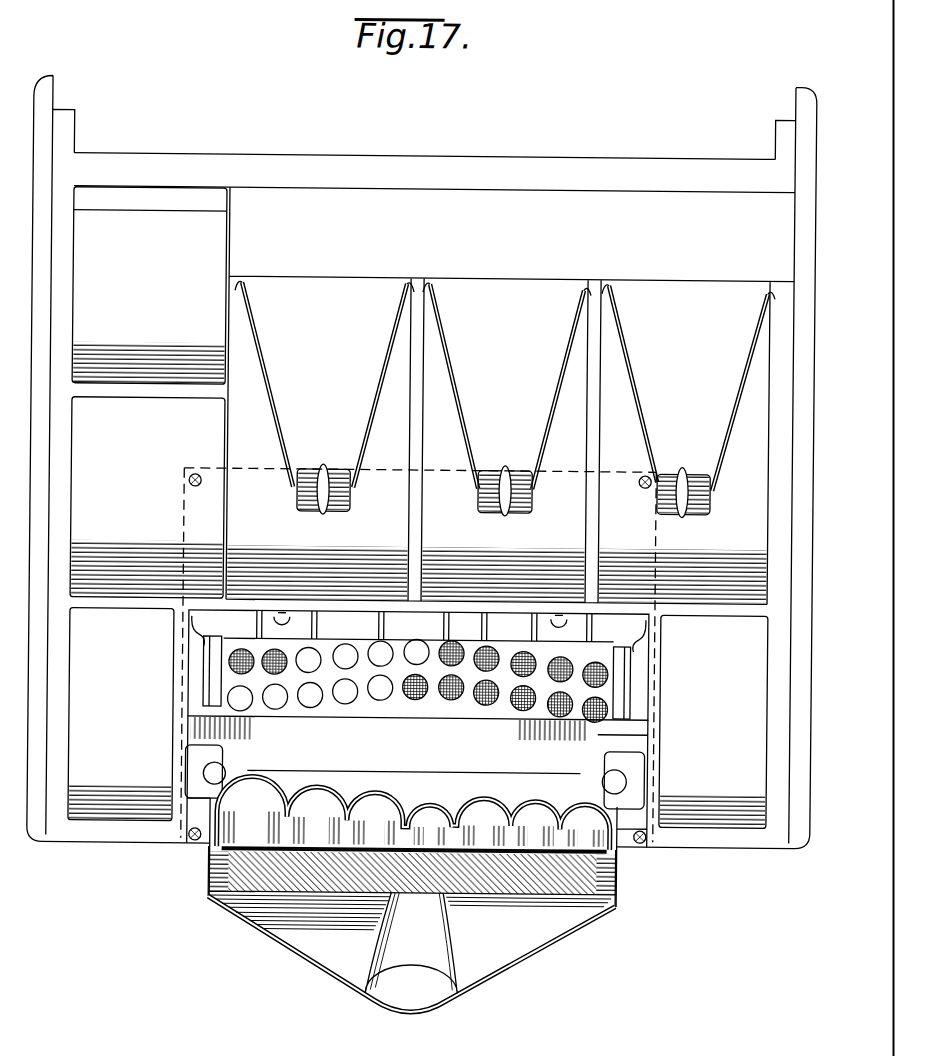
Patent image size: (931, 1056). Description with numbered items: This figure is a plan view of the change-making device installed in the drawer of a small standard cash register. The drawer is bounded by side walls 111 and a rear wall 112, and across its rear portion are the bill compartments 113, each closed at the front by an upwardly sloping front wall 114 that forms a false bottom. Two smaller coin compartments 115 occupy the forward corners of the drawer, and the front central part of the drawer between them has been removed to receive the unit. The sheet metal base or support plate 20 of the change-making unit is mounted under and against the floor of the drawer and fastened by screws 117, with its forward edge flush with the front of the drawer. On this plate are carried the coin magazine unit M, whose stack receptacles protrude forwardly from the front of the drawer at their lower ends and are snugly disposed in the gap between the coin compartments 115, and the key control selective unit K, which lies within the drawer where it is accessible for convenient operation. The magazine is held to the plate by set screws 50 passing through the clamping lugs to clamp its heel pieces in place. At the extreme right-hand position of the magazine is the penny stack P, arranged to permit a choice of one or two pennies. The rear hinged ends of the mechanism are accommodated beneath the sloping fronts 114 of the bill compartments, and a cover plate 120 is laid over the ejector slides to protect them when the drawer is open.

The side walls 111 is at (818, 120).
The rear wall 112 is at (268, 158).
The bill compartments 113 is at (511, 326).
The upwardly sloping front walls 114 is at (727, 583).
The coin compartments 115 is at (193, 758).
The screws 117 is at (189, 483).
The cover plate 120 is at (590, 738).
The base or support plate 20 is at (196, 622).
The set screws 50 is at (214, 776).
The key control selective unit K is at (428, 722).
The coin magazine unit M is at (405, 768).
The penny stack P is at (600, 830).